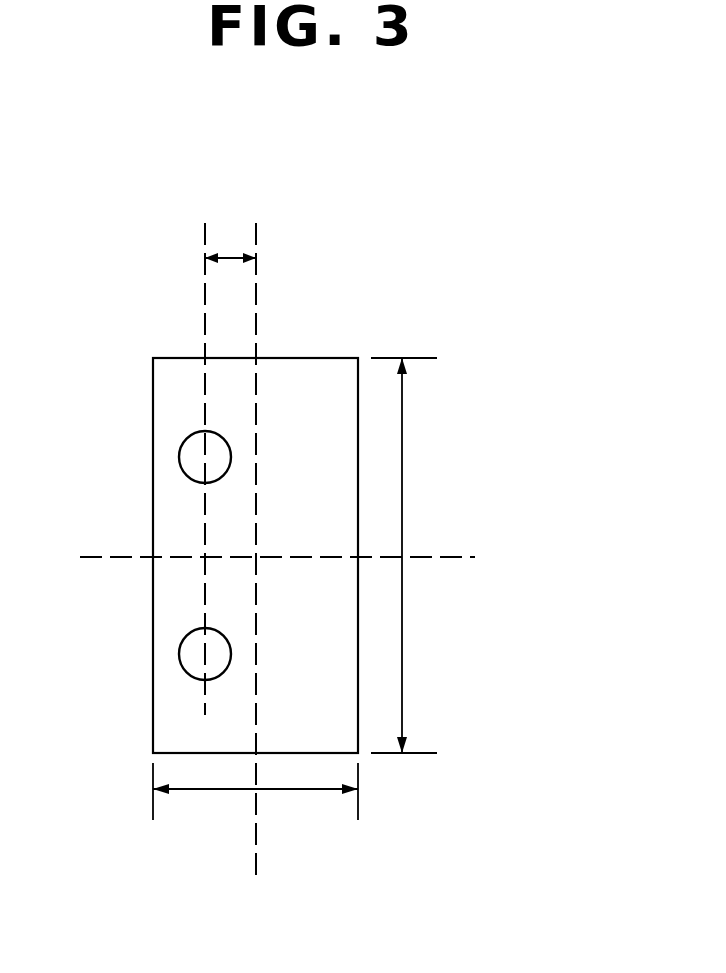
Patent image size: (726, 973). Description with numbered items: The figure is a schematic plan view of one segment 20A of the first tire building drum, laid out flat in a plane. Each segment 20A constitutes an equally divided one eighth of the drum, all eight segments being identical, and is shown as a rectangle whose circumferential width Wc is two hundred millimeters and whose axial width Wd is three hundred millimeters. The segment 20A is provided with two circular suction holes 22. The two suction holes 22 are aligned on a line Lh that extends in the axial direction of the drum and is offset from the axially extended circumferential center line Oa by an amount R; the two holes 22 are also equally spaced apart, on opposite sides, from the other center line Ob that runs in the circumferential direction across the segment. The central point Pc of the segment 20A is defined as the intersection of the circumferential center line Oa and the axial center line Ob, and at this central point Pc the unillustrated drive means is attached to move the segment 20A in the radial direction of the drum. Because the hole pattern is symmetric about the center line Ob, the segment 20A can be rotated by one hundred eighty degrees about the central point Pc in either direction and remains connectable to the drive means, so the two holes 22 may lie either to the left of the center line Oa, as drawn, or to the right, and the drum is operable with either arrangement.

The segment 20A is at (345, 353).
The suction hole 22 is at (180, 457).
The line Lh is at (205, 242).
The circumferential center line Oa is at (260, 575).
The axial center line Ob is at (314, 556).
The central point Pc is at (255, 557).
The offset amount R is at (230, 211).
The axial width Wd is at (402, 465).
The circumferential width Wc is at (295, 790).